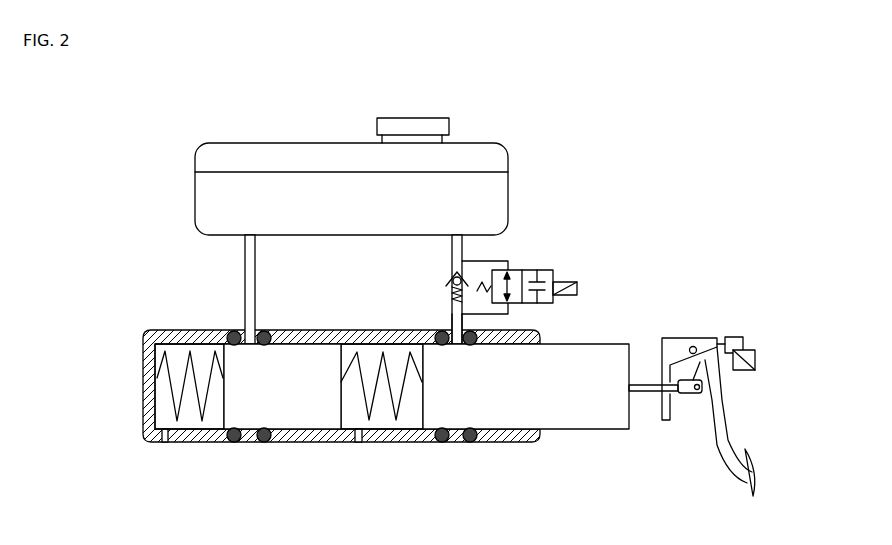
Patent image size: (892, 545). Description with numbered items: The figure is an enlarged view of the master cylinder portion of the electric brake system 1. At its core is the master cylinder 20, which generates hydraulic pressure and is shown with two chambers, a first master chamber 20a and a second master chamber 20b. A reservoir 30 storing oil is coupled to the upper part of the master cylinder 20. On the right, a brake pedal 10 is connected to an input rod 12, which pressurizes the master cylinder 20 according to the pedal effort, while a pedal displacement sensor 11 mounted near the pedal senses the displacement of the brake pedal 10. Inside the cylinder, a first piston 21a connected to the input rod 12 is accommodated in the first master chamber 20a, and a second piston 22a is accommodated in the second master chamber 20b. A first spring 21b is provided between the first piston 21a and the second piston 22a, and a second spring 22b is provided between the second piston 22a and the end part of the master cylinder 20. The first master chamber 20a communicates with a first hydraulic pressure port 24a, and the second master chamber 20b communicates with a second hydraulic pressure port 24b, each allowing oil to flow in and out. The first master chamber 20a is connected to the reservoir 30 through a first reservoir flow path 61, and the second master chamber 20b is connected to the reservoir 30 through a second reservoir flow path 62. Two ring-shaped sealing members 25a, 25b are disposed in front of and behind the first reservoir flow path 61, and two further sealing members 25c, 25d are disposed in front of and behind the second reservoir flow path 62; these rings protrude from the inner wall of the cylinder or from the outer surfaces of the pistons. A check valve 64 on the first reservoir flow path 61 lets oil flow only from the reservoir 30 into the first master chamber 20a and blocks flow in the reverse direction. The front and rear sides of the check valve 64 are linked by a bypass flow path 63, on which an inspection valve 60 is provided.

The electric brake system 1 is at (189, 101).
The brake pedal 10 is at (712, 408).
The pedal displacement sensor 11 is at (752, 347).
The input rod 12 is at (641, 385).
The master cylinder 20 is at (150, 352).
The first master chamber 20a is at (365, 345).
The second master chamber 20b is at (200, 345).
The first piston 21a is at (562, 347).
The first spring 21b is at (400, 432).
The second piston 22a is at (312, 350).
The second spring 22b is at (170, 374).
The first hydraulic pressure port 24a is at (358, 443).
The second hydraulic pressure port 24b is at (167, 443).
The sealing member 25a is at (470, 445).
The sealing member 25b is at (442, 445).
The sealing member 25c is at (264, 445).
The sealing member 25d is at (236, 445).
The reservoir 30 is at (195, 166).
The inspection valve 60 is at (558, 278).
The first reservoir flow path 61 is at (452, 258).
The second reservoir flow path 62 is at (245, 258).
The bypass flow path 63 is at (466, 316).
The check valve 64 is at (447, 288).